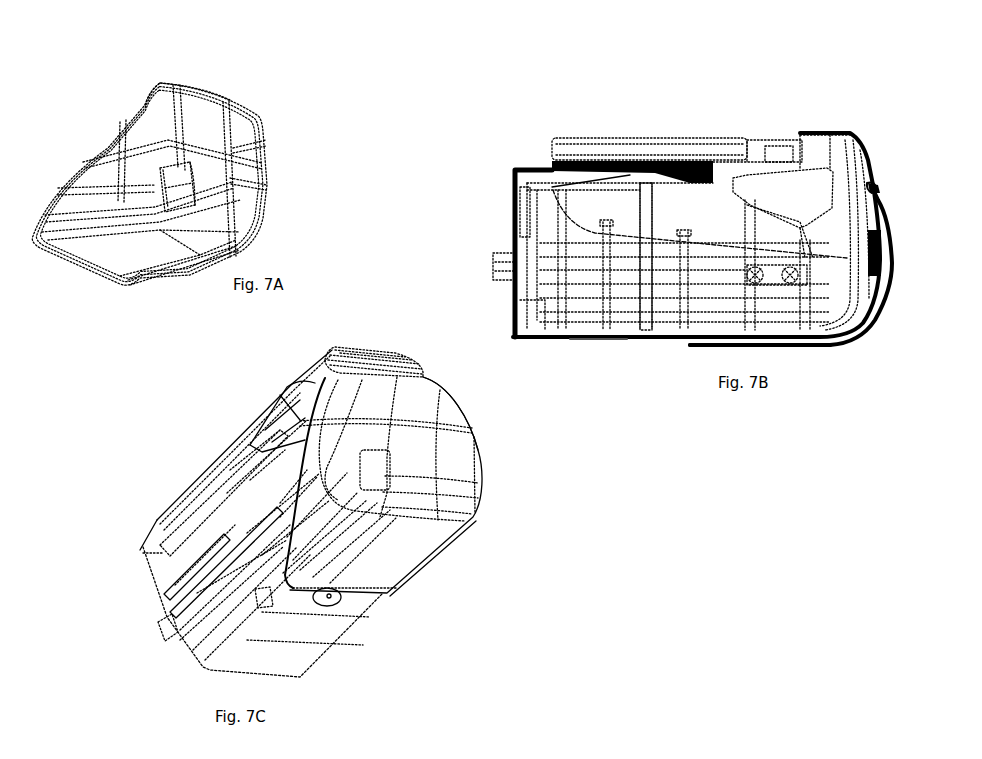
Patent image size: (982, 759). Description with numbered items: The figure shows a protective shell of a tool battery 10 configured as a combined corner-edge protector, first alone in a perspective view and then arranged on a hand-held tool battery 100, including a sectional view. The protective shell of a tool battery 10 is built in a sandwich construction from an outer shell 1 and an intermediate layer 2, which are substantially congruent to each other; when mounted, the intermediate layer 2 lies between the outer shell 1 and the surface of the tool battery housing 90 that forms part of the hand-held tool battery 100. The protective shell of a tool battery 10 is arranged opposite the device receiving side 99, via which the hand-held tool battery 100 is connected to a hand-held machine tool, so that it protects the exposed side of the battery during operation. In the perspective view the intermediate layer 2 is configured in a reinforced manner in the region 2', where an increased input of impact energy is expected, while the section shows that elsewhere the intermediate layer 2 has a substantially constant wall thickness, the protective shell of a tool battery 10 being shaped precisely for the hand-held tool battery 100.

In FIG. 7A, the outer shell 1 is at (252, 158).
In FIG. 7B, the outer shell 1 is at (885, 237).
In FIG. 7C, the outer shell 1 is at (400, 558).
In FIG. 7A, the intermediate layer 2 is at (187, 71).
In FIG. 7B, the intermediate layer 2 is at (882, 143).
In FIG. 7A, the region 2' is at (227, 130).
In FIG. 7B, the protective shell of a tool battery 10 is at (902, 307).
In FIG. 7C, the protective shell of a tool battery 10 is at (493, 467).
In FIG. 7B, the tool battery housing 90 is at (643, 325).
In FIG. 7C, the tool battery housing 90 is at (312, 633).
In FIG. 7B, the device receiving side 99 is at (620, 135).
In FIG. 7C, the device receiving side 99 is at (182, 480).
In FIG. 7B, the hand-held tool battery 100 is at (572, 357).
In FIG. 7C, the hand-held tool battery 100 is at (212, 382).